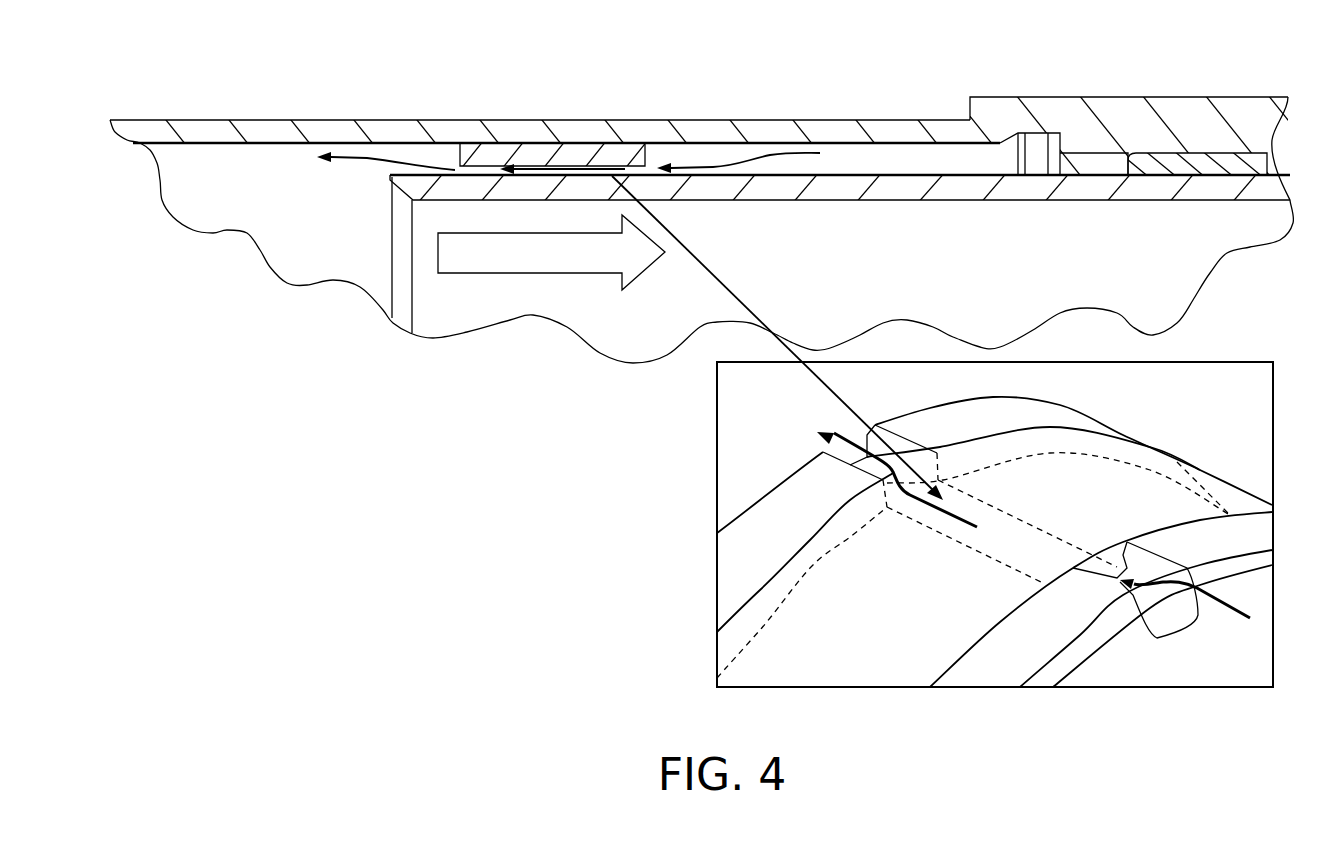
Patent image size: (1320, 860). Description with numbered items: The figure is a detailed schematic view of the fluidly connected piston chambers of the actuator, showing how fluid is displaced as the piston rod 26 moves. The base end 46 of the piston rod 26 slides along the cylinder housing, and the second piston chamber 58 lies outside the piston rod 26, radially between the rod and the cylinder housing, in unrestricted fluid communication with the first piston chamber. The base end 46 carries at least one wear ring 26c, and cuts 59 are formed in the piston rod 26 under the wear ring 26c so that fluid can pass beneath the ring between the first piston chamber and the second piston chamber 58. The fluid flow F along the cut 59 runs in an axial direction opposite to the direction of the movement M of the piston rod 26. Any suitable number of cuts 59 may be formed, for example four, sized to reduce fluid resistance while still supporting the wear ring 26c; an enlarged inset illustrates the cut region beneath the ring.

The piston rod 26 is at (910, 183).
The wear ring 26c is at (600, 153).
The base end 46 is at (450, 153).
The second piston chamber 58 is at (860, 153).
The cuts 59 is at (580, 164).
The fluid flow F is at (773, 147).
The movement of the piston rod M is at (537, 263).